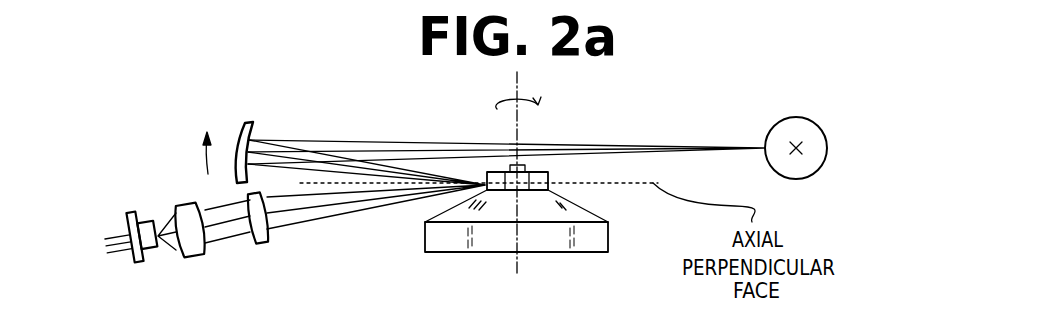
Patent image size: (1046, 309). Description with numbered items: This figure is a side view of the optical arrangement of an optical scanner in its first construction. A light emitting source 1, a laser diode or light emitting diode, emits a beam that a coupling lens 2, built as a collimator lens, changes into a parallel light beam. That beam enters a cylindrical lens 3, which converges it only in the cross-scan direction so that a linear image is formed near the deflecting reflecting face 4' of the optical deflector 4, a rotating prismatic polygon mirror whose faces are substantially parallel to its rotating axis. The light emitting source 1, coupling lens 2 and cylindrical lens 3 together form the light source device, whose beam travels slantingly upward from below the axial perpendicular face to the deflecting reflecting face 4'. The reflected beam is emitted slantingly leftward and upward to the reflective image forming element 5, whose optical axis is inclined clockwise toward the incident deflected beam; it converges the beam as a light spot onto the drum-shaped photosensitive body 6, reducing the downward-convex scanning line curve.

The light emitting source 1 is at (141, 221).
The coupling lens 2 is at (180, 203).
The cylindrical lens 3 is at (262, 245).
The optical deflector 4 is at (545, 221).
The deflecting reflecting face 4' is at (595, 173).
The reflective image forming element 5 is at (245, 121).
The photosensitive body 6 is at (789, 117).